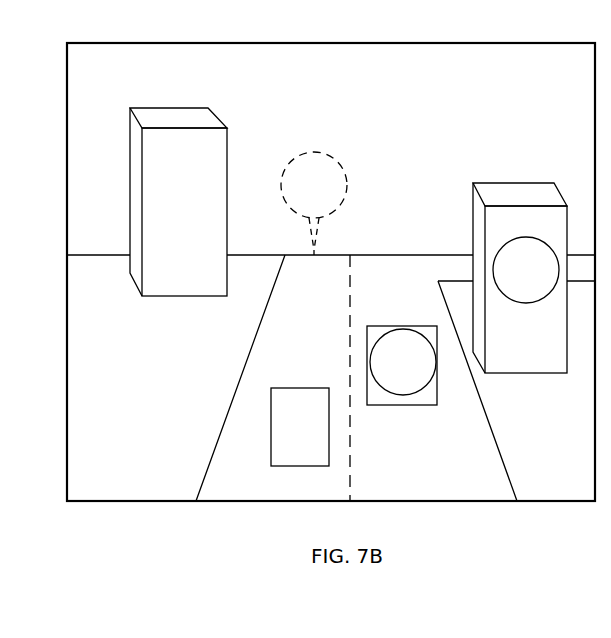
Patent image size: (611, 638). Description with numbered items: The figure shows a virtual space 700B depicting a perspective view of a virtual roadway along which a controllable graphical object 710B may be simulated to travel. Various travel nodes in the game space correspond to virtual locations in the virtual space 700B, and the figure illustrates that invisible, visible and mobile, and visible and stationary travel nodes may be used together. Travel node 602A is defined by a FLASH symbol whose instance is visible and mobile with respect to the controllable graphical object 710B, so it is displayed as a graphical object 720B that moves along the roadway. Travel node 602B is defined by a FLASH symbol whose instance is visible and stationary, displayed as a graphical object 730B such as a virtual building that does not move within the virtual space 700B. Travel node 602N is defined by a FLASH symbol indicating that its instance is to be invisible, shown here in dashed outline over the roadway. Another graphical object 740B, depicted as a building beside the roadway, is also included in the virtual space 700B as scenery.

The virtual space 700B is at (298, 116).
The graphical object 740B is at (175, 112).
The graphical object 730B is at (522, 195).
The graphical object 720B is at (387, 326).
The controllable graphical object 710B is at (280, 388).
The travel node 602A is at (430, 373).
The travel node 602B is at (553, 281).
The travel node 602N is at (341, 196).